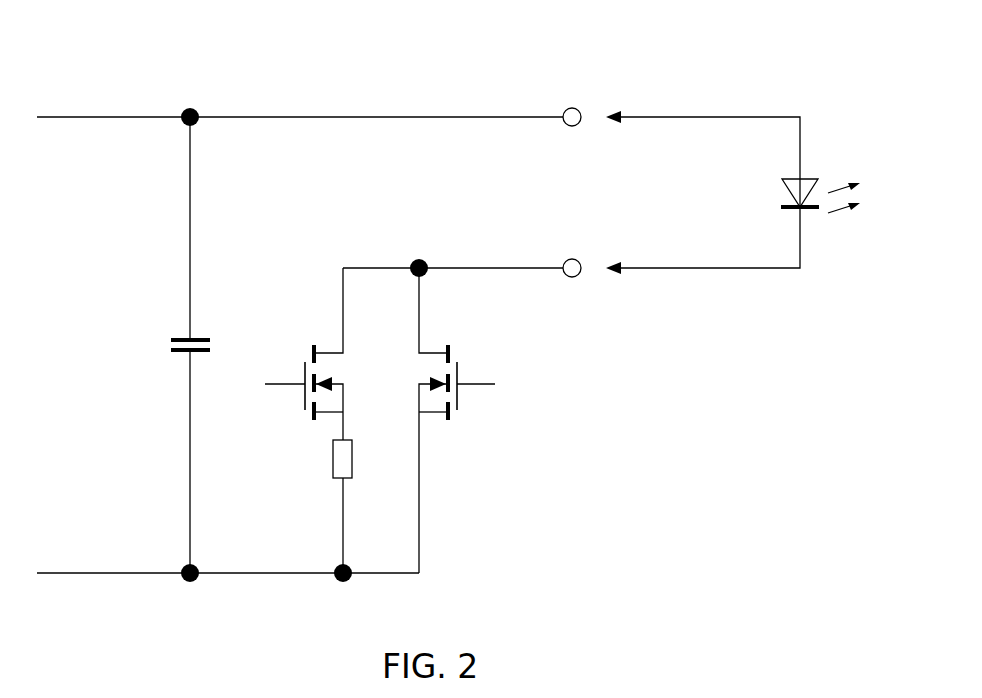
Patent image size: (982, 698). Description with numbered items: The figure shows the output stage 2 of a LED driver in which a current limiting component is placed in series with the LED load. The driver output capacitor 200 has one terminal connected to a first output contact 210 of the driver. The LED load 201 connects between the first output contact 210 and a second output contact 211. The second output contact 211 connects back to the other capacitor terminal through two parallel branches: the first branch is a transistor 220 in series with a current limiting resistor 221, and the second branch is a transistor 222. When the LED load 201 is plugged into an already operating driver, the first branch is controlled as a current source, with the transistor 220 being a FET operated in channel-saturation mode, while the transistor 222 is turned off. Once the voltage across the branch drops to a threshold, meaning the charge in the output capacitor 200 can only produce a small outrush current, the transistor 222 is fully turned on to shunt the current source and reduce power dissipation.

The output stage 2 is at (742, 75).
The driver output capacitor 200 is at (180, 354).
The LED load 201 is at (813, 177).
The first output contact 210 is at (581, 111).
The second output contact 211 is at (581, 261).
The transistor 220 is at (307, 363).
The current limiting resistor 221 is at (332, 452).
The transistor 222 is at (460, 398).